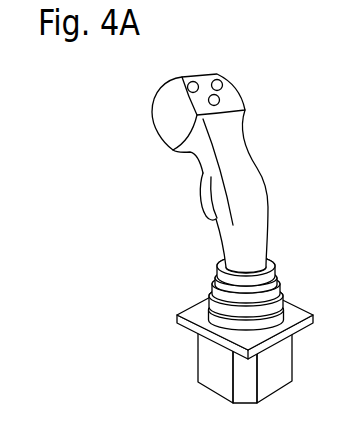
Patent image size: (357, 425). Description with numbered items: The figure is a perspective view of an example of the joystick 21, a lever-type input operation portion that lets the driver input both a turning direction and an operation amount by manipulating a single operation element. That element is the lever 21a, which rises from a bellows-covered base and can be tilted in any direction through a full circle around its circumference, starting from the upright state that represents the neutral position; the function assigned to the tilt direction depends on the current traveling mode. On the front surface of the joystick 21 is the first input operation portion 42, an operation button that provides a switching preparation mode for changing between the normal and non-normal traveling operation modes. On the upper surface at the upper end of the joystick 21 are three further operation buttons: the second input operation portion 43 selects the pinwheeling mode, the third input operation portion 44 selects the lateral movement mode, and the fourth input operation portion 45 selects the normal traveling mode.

The joystick 21 is at (208, 156).
The lever 21a is at (240, 233).
The first input operation portion 42 is at (200, 198).
The second input operation portion 43 is at (217, 85).
The third input operation portion 44 is at (193, 87).
The fourth input operation portion 45 is at (214, 100).